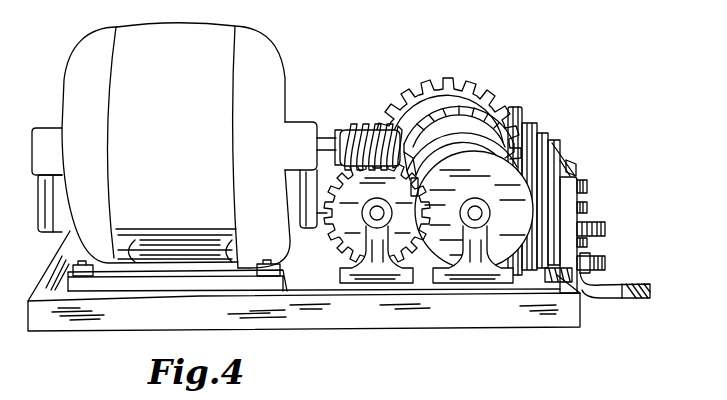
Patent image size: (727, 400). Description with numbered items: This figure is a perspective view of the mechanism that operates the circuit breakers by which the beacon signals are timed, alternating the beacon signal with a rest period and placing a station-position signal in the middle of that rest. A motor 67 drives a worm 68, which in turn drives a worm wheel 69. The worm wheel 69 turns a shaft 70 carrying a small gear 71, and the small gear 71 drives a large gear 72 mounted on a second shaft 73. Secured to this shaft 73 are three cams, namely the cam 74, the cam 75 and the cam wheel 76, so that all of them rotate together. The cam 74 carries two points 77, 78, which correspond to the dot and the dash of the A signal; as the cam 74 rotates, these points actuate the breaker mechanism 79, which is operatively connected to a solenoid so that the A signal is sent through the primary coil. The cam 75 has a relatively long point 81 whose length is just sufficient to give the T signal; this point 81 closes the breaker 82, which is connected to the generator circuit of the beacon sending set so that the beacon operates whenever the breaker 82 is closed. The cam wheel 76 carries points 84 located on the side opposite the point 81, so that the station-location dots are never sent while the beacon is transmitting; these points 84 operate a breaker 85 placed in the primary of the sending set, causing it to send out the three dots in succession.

The motor 67 is at (161, 149).
The worm 68 is at (339, 128).
The worm wheel 69 is at (377, 213).
The shaft 70 is at (374, 220).
The small gear 71 is at (366, 124).
The large gear 72 is at (450, 82).
The shaft 73 is at (482, 219).
The cam 74 is at (433, 127).
The cam 75 is at (489, 137).
The cam wheel 76 is at (515, 185).
The point 77 is at (480, 142).
The point 78 is at (470, 100).
The breaker mechanism 79 is at (520, 107).
The point 81 is at (417, 130).
The breaker 82 is at (532, 123).
The points 84 is at (418, 184).
The breaker 85 is at (545, 134).